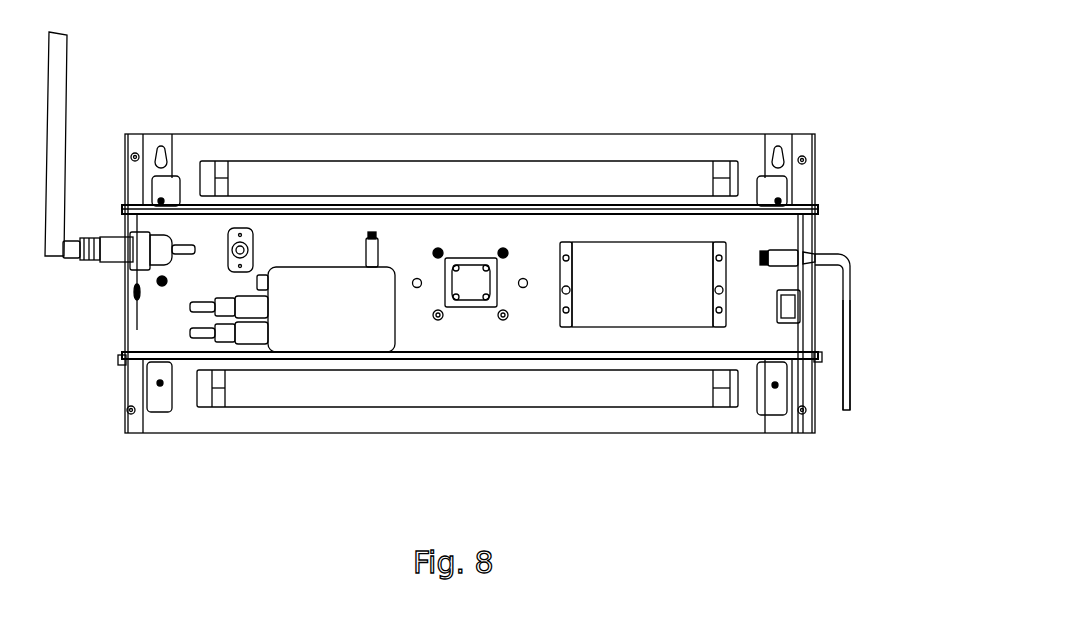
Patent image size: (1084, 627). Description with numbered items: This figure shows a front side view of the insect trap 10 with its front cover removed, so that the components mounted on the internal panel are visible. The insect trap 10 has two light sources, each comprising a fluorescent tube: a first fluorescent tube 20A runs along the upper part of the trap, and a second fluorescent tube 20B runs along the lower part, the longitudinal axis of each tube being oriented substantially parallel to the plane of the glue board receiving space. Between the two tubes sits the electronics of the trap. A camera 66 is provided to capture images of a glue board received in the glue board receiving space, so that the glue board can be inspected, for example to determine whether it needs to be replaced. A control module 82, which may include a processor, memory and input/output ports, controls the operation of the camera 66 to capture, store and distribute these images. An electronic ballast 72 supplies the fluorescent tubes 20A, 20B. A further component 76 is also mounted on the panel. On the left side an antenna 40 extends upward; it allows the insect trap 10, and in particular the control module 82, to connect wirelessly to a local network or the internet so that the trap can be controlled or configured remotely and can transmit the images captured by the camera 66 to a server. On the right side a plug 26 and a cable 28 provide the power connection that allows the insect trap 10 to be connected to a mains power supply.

The insect trap 10 is at (673, 80).
The antenna 40 is at (58, 115).
The first fluorescent tube 20A is at (425, 175).
The second fluorescent tube 20B is at (333, 388).
The control module 82 is at (315, 315).
The camera 66 is at (470, 302).
The electronic ballast 72 is at (652, 300).
The terminal block 76 is at (790, 307).
The plug 26 is at (808, 250).
The cable 28 is at (848, 362).